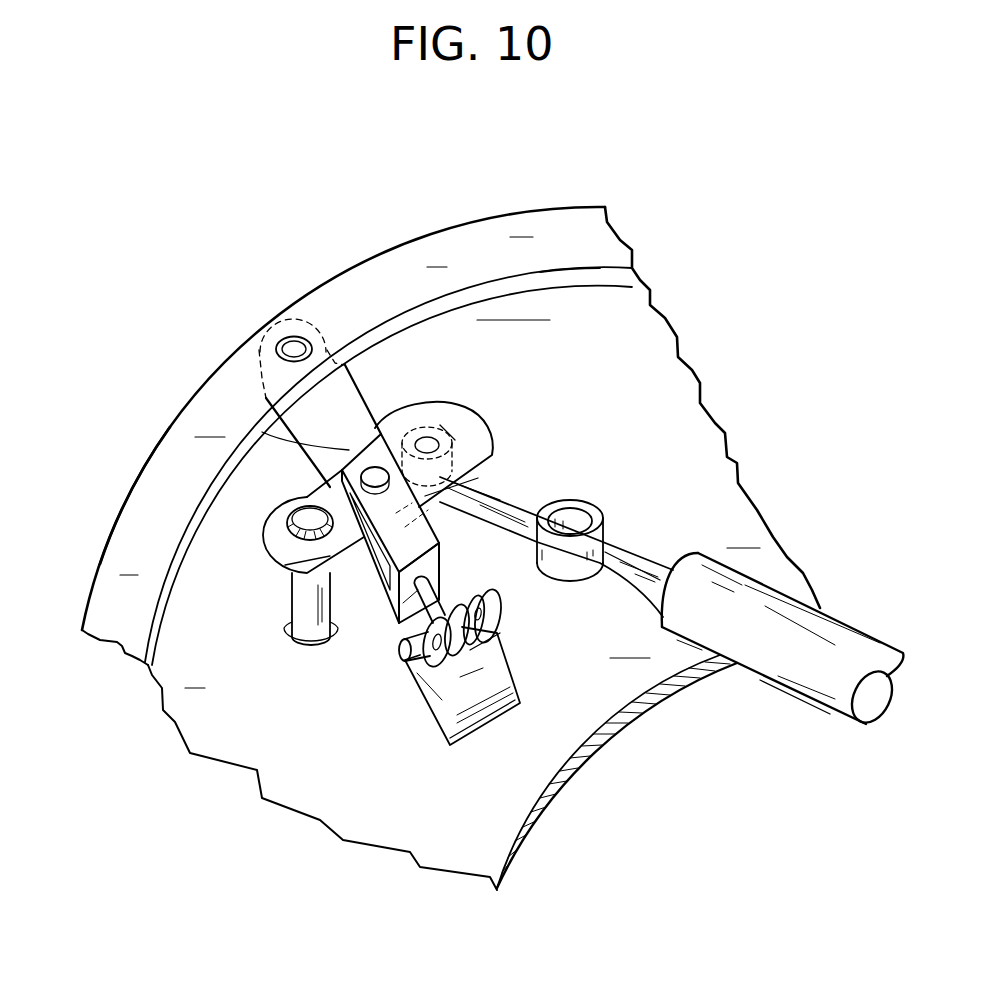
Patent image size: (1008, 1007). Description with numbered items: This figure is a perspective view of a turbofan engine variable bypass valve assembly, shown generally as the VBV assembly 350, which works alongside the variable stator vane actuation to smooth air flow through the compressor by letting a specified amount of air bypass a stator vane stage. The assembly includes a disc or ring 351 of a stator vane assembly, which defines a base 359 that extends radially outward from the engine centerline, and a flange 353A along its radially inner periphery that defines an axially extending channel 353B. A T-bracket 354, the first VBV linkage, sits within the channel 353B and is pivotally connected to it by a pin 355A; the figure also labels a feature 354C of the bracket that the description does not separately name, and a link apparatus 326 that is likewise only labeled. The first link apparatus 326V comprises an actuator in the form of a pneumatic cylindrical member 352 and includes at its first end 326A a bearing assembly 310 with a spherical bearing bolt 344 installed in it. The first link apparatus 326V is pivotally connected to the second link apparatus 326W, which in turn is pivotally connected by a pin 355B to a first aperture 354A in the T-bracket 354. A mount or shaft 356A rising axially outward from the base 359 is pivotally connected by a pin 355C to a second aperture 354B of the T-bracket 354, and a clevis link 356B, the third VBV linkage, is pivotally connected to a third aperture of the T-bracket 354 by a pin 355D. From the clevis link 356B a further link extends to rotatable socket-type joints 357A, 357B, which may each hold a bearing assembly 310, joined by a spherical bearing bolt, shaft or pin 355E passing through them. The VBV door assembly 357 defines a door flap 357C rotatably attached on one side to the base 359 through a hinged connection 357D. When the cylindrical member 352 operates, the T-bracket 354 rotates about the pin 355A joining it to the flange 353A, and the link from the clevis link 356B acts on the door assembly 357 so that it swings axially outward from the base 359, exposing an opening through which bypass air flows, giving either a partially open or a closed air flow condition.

The VBV assembly 350 is at (306, 152).
The ring 351 is at (150, 373).
The pneumatic cylindrical member 352 is at (867, 616).
The flange 353A is at (130, 492).
The channel 353B is at (572, 297).
The T-bracket 354 is at (360, 385).
The first aperture 354A is at (430, 445).
The second aperture 354B is at (300, 547).
The arm of lever plate 354C is at (262, 432).
The pin 355A is at (291, 337).
The pin 355B is at (445, 430).
The pin 355C is at (308, 527).
The pin 355D is at (372, 477).
The pin 355E is at (405, 640).
The mount or shaft 356A is at (293, 610).
The clevis link 356B is at (397, 612).
The VBV door assembly 357 is at (439, 775).
The socket-type joint 357A is at (500, 605).
The socket-type joint 357B is at (440, 677).
The door flap 357C is at (482, 728).
The hinged connection 357D is at (405, 665).
The cable 326 is at (490, 656).
The first end 326A is at (630, 529).
The first link apparatus 326V is at (781, 714).
The second link apparatus 326W is at (503, 497).
The spherical bearing bolt 344 is at (589, 489).
The bearing assembly 310 is at (567, 520).
The base 359 is at (667, 388).